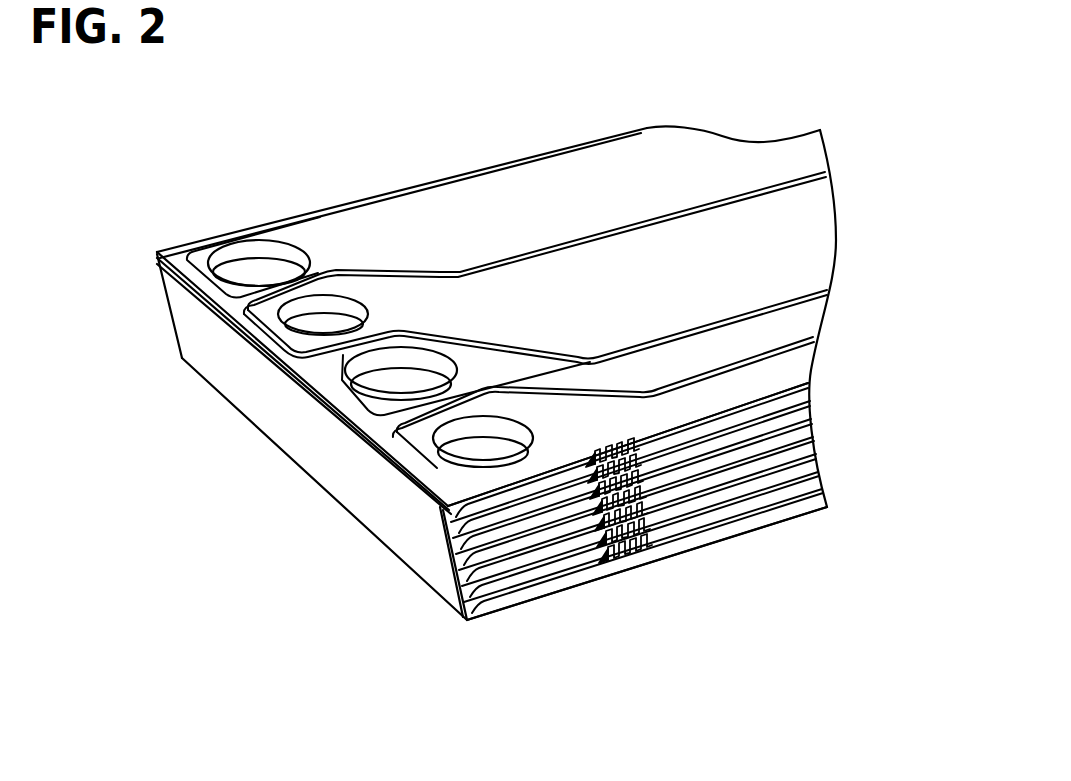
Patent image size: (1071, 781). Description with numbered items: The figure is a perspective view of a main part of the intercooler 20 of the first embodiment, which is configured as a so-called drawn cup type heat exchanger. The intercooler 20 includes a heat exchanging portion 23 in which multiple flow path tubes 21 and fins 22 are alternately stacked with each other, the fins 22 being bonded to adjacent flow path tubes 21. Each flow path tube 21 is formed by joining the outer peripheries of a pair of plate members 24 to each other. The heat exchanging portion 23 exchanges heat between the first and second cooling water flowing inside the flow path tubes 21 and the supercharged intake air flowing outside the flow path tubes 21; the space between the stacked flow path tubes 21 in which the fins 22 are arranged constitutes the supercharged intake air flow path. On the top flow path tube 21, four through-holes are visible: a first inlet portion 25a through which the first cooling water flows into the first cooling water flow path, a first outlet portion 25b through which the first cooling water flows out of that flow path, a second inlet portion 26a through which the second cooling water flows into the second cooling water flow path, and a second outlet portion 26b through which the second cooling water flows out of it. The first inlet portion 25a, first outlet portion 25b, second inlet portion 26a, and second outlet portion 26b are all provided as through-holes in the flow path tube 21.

The intercooler 20 is at (360, 178).
The flow path tube 21 is at (458, 588).
The fin 22 is at (603, 575).
The heat exchanging portion 23 is at (273, 221).
The plate member 24 is at (685, 537).
The first inlet portion 25a is at (218, 253).
The first outlet portion 25b is at (262, 316).
The second inlet portion 26a is at (340, 378).
The second outlet portion 26b is at (397, 433).